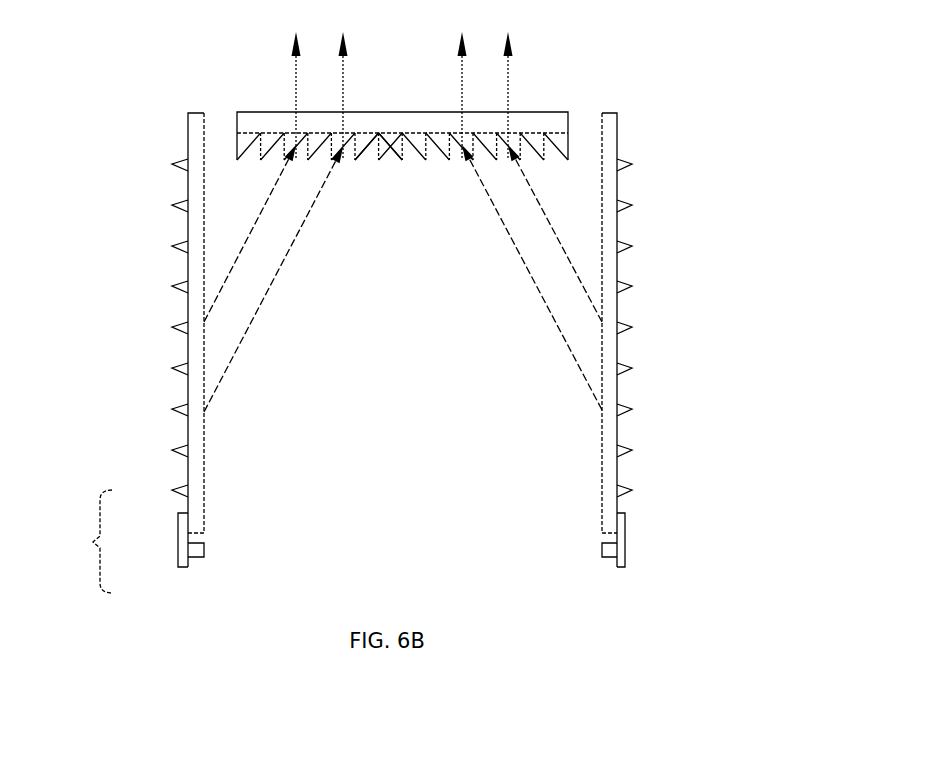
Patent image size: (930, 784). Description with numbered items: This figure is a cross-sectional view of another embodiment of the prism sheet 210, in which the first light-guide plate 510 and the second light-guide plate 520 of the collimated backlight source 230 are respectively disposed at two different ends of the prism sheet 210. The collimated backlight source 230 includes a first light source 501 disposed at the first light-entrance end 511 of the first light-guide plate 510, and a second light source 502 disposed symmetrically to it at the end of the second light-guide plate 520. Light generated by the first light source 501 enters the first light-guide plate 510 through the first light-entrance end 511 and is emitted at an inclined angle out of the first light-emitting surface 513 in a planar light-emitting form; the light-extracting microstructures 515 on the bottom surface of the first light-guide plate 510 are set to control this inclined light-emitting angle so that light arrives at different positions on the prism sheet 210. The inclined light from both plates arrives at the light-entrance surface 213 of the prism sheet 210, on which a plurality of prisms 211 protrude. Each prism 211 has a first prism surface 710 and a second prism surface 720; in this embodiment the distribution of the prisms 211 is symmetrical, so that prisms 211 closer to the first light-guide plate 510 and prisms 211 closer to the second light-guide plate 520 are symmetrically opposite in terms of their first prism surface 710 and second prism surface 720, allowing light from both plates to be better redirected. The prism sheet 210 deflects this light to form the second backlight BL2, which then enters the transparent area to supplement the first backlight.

The prism sheet 210 is at (555, 123).
The light-entrance surface 213 is at (347, 132).
The prism 211 is at (391, 138).
The second backlight BL2 is at (295, 82).
The first prism surface 710 is at (369, 149).
The second prism surface 720 is at (344, 150).
The first light-guide plate 510 is at (193, 434).
The first light-emitting surface 513 is at (205, 480).
The light-extracting microstructures 515 is at (178, 162).
The first light-entrance end 511 is at (202, 533).
The first light source 501 is at (195, 556).
The collimated backlight source 230 is at (81, 541).
The second light-guide plate 520 is at (605, 430).
The second light source 502 is at (612, 552).